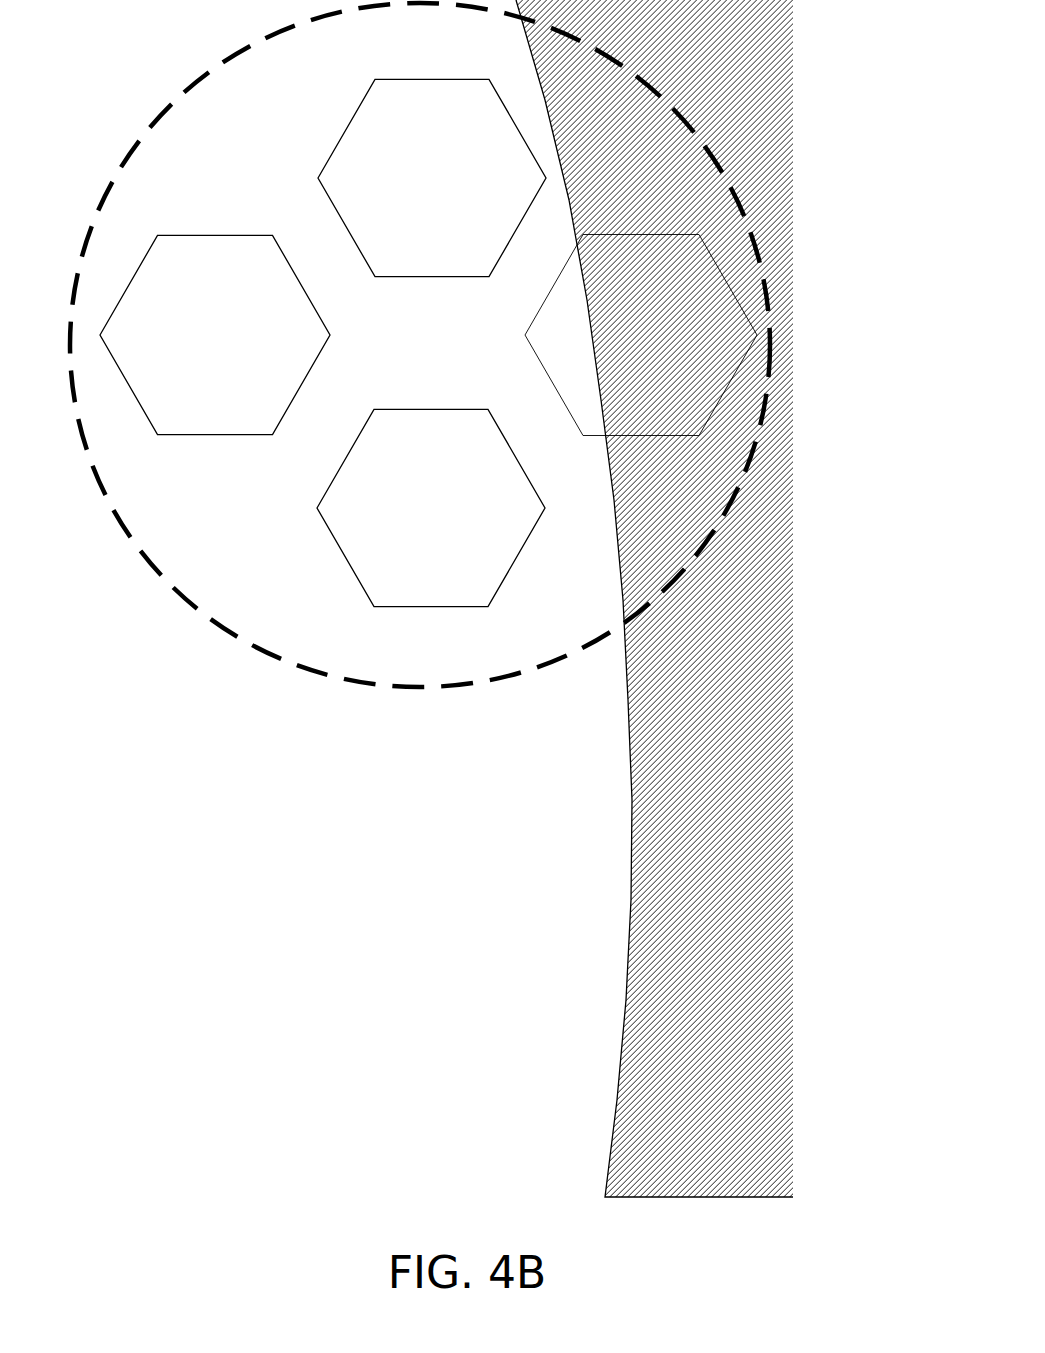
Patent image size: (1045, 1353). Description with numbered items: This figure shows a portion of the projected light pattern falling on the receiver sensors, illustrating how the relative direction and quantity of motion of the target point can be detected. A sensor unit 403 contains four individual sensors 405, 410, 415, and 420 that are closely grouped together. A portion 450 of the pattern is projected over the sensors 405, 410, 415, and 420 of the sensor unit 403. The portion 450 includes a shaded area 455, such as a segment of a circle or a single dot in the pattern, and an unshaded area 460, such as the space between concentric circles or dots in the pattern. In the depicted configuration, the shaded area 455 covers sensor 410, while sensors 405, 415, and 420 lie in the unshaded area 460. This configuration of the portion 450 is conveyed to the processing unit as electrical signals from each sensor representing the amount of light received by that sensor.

The sensor unit 403 is at (227, 624).
The sensor 405 is at (431, 507).
The sensor 410 is at (553, 357).
The sensor 415 is at (432, 177).
The sensor 420 is at (215, 334).
The portion 450 is at (428, 789).
The shaded area 455 is at (650, 605).
The unshaded area 460 is at (275, 709).